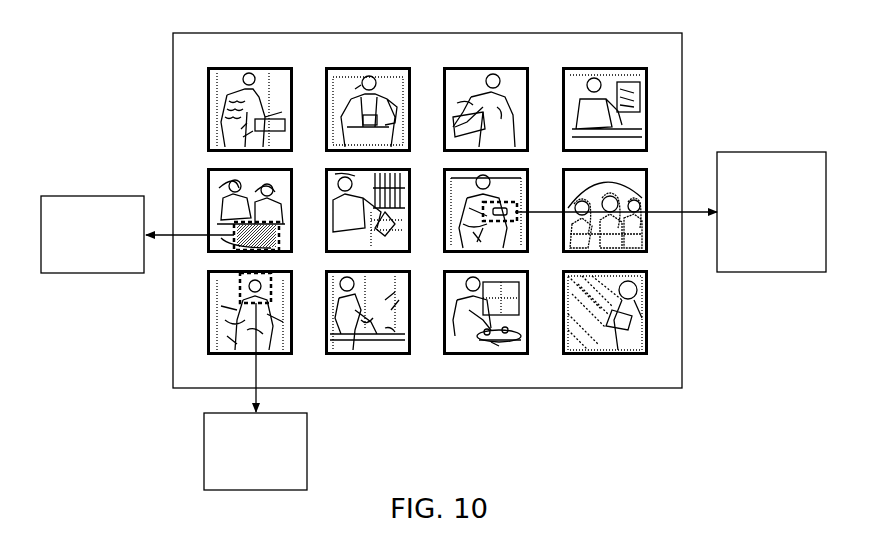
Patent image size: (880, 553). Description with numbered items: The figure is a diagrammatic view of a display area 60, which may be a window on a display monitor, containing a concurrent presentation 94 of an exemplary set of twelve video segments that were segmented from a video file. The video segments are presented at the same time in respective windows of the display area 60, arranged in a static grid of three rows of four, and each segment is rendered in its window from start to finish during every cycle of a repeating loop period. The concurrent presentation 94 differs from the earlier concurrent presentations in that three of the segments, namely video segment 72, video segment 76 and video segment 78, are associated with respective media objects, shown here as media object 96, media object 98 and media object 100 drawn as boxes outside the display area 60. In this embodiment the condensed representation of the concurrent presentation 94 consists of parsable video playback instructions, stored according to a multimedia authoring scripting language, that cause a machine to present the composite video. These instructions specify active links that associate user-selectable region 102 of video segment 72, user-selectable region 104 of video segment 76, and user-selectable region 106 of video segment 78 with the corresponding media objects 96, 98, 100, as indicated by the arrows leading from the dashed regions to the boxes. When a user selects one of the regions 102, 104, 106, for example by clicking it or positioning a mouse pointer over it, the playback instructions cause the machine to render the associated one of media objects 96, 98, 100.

The concurrent presentation 94 is at (126, 27).
The display area 60 is at (682, 63).
The video segment 76 is at (267, 211).
The video segment 72 is at (566, 201).
The video segment 78 is at (233, 342).
The user-selectable region 102 is at (522, 186).
The user-selectable region 104 is at (223, 288).
The user-selectable region 106 is at (279, 247).
The media object 100 is at (93, 274).
The media object 96 is at (771, 273).
The media object 98 is at (308, 452).